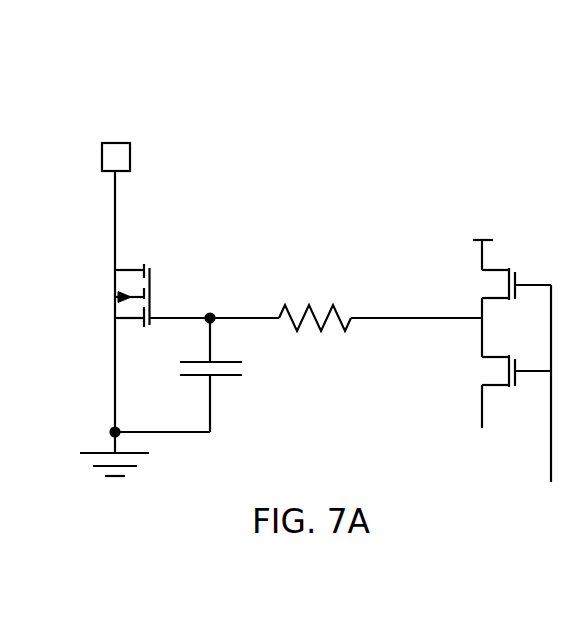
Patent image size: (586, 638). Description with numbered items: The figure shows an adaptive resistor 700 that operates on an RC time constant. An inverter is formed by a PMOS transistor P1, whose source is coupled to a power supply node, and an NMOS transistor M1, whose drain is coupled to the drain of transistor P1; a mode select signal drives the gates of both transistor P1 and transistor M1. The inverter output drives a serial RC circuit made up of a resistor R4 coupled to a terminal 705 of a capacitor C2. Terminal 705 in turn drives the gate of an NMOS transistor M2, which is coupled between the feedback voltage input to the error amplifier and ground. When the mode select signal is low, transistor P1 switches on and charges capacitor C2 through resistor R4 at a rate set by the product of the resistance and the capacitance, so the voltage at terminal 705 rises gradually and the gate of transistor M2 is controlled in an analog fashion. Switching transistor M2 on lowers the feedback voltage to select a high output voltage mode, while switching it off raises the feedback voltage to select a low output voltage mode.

The adaptive resistor 700 is at (269, 210).
The terminal 705 is at (210, 314).
The NMOS transistor M2 is at (113, 295).
The resistor R4 is at (315, 302).
The capacitor C2 is at (228, 375).
The PMOS transistor P1 is at (499, 270).
The NMOS transistor M1 is at (497, 391).